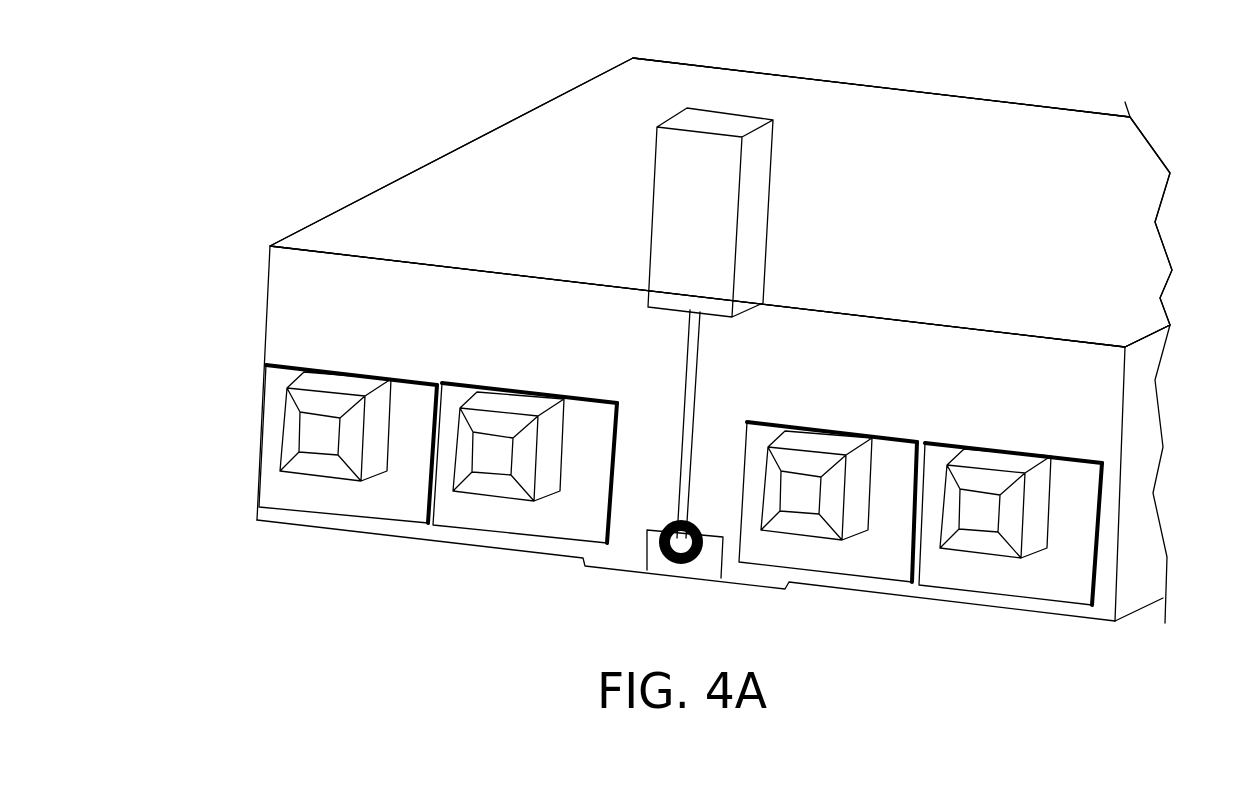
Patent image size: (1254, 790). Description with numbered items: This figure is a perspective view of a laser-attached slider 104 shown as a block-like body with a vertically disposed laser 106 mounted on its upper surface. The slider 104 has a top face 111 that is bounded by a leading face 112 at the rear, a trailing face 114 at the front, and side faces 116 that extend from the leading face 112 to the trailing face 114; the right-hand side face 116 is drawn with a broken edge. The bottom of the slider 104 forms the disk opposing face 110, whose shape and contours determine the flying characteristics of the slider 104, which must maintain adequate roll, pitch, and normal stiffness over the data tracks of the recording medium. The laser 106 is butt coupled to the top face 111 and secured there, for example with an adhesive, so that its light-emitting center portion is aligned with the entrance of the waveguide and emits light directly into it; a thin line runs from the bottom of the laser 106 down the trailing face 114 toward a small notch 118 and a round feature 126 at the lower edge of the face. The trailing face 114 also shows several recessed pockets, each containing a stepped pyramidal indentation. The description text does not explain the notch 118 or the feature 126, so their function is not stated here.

The slider 104 is at (557, 123).
The laser 106 is at (752, 232).
The disk opposing face 110 is at (910, 599).
The top face 111 is at (903, 134).
The leading face 112 is at (748, 71).
The trailing face 114 is at (321, 311).
The side faces 116 is at (318, 224).
The notch 118 is at (647, 503).
The cable 126 is at (695, 423).